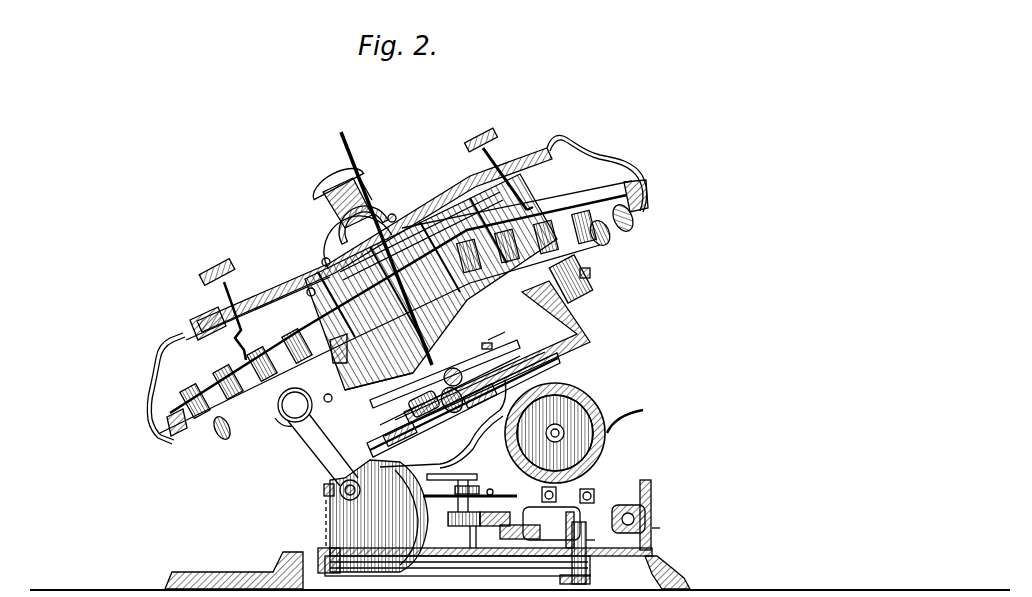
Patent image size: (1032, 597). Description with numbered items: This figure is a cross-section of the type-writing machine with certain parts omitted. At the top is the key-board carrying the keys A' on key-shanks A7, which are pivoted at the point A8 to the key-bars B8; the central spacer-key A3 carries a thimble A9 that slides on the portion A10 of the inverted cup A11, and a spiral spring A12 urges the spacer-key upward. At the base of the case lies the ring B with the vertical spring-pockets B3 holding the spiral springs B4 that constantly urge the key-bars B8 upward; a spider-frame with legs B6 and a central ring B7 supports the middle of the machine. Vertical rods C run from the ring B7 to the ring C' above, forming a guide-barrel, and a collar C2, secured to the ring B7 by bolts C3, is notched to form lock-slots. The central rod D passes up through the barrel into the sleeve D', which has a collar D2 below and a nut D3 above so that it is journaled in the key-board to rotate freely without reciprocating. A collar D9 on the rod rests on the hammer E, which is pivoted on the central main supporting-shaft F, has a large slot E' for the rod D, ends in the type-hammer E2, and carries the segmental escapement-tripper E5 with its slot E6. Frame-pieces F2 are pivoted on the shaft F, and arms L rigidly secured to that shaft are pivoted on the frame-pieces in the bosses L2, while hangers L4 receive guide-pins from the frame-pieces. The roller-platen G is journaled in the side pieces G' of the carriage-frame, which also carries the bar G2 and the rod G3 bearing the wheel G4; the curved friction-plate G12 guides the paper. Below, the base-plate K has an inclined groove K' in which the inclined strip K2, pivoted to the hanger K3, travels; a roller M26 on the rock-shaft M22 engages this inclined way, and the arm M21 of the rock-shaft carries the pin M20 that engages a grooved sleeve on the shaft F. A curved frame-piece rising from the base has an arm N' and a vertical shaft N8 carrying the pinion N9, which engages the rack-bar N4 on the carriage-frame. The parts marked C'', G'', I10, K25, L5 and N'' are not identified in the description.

The keys A' is at (363, 195).
The central spacer-key A3 is at (335, 176).
The key-shanks A7 is at (234, 292).
The pivot point of key-shanks A8 is at (545, 199).
The thimble A9 is at (360, 175).
The portion of inverted cup A10 is at (375, 202).
The inverted cup A11 is at (390, 213).
The spiral spring A12 is at (368, 185).
The ring B is at (190, 448).
The spring-pockets B3 is at (634, 232).
The spiral springs B4 is at (650, 196).
The legs of spider-frame B6 is at (340, 398).
The central ring of spider-frame B7 is at (344, 366).
The key-bars B8 is at (330, 302).
The vertical rods C is at (431, 282).
The ring C' is at (291, 257).
The collar C2 is at (410, 400).
The bolts C3 is at (496, 336).
The stop C'' is at (479, 344).
The rod D is at (343, 236).
The sleeve D' is at (308, 253).
The collar D2 is at (455, 222).
The nut D3 is at (372, 212).
The collar D9 is at (380, 413).
The hammer E is at (463, 405).
The slot E' is at (364, 516).
The type-hammer E2 is at (508, 354).
The escapement-tripper E5 is at (430, 462).
The slot E6 is at (412, 492).
The central main supporting-shaft F is at (324, 490).
The frame-pieces F2 is at (590, 352).
The roller-platen G is at (567, 433).
The side pieces G' is at (489, 492).
The bar G2 is at (530, 518).
The rod G3 is at (628, 505).
The wheel G4 is at (652, 494).
The bracket G'' is at (612, 476).
The curved friction-plate G12 is at (643, 422).
The pin I10 is at (491, 489).
The base-plate K is at (427, 568).
The groove K' is at (600, 553).
The inclined strip K2 is at (586, 540).
The hanger K3 is at (576, 520).
The block K25 is at (540, 532).
The arms L is at (312, 424).
The bosses L2 is at (280, 420).
The hangers L4 is at (586, 282).
The nut L5 is at (590, 278).
The pin M20 is at (342, 486).
The rock-shaft arm M21 is at (324, 506).
The rock-shaft M22 is at (540, 566).
The roller M26 is at (660, 528).
The arm N' is at (452, 493).
The block N'' is at (458, 495).
The rack-bar N4 is at (490, 527).
The vertical shaft N8 is at (468, 542).
The pinion N9 is at (449, 519).